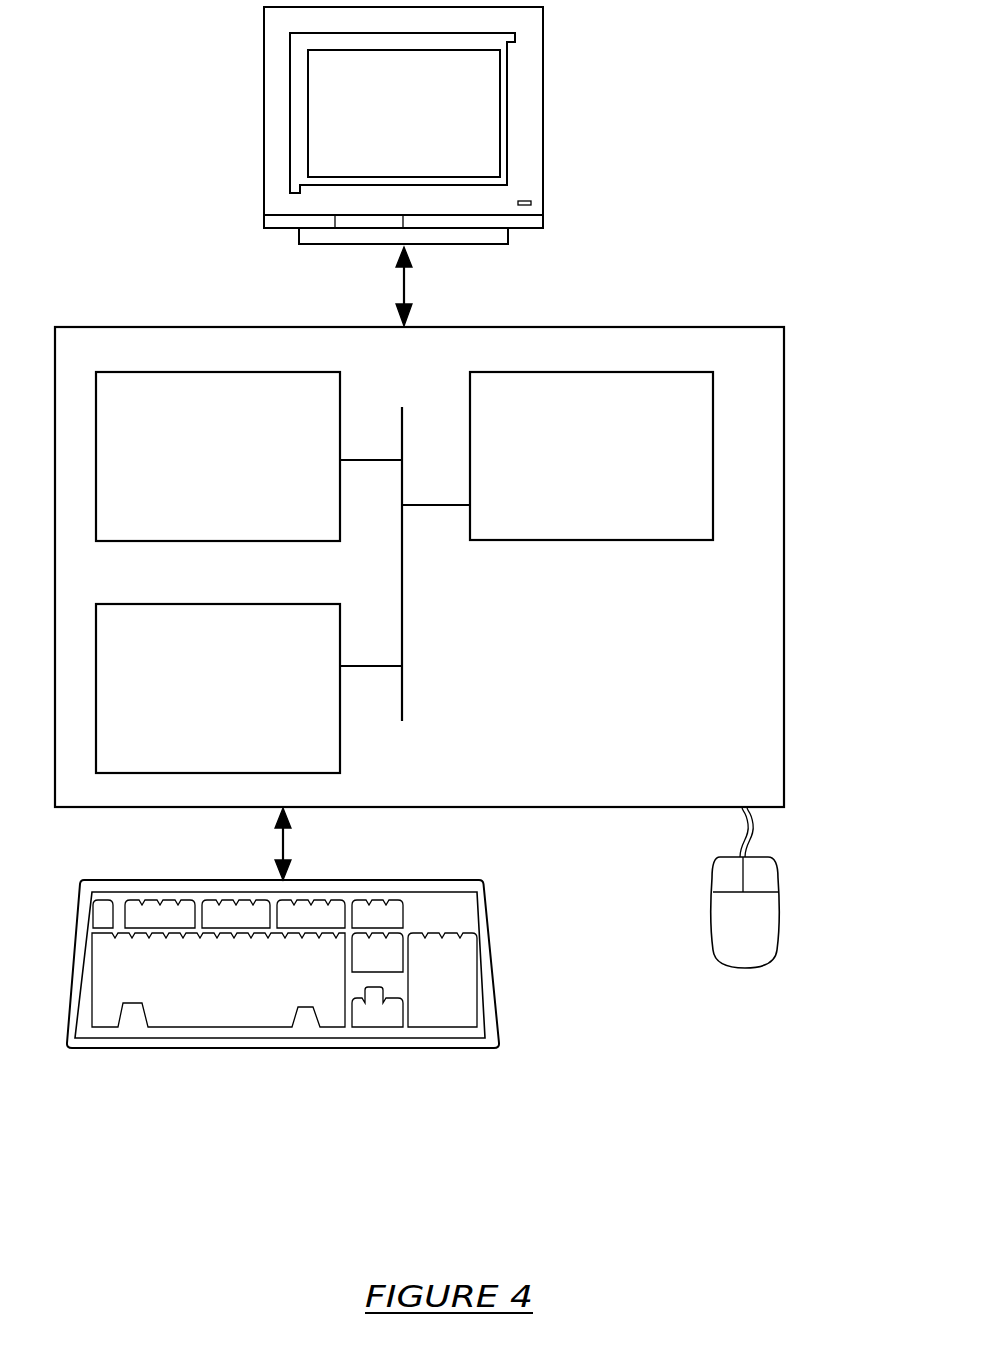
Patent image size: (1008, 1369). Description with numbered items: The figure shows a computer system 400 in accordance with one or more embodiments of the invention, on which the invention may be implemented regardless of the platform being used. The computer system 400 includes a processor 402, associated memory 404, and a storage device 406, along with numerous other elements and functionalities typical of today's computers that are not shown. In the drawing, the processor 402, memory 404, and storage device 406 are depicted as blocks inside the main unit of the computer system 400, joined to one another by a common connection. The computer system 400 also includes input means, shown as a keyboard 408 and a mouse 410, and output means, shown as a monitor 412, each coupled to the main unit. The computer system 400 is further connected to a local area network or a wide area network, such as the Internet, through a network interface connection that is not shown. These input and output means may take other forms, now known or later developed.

The computer system 400 is at (797, 178).
The processor 402 is at (613, 468).
The memory 404 is at (241, 468).
The storage device 406 is at (236, 700).
The keyboard 408 is at (235, 1000).
The mouse 410 is at (767, 934).
The monitor 412 is at (426, 132).